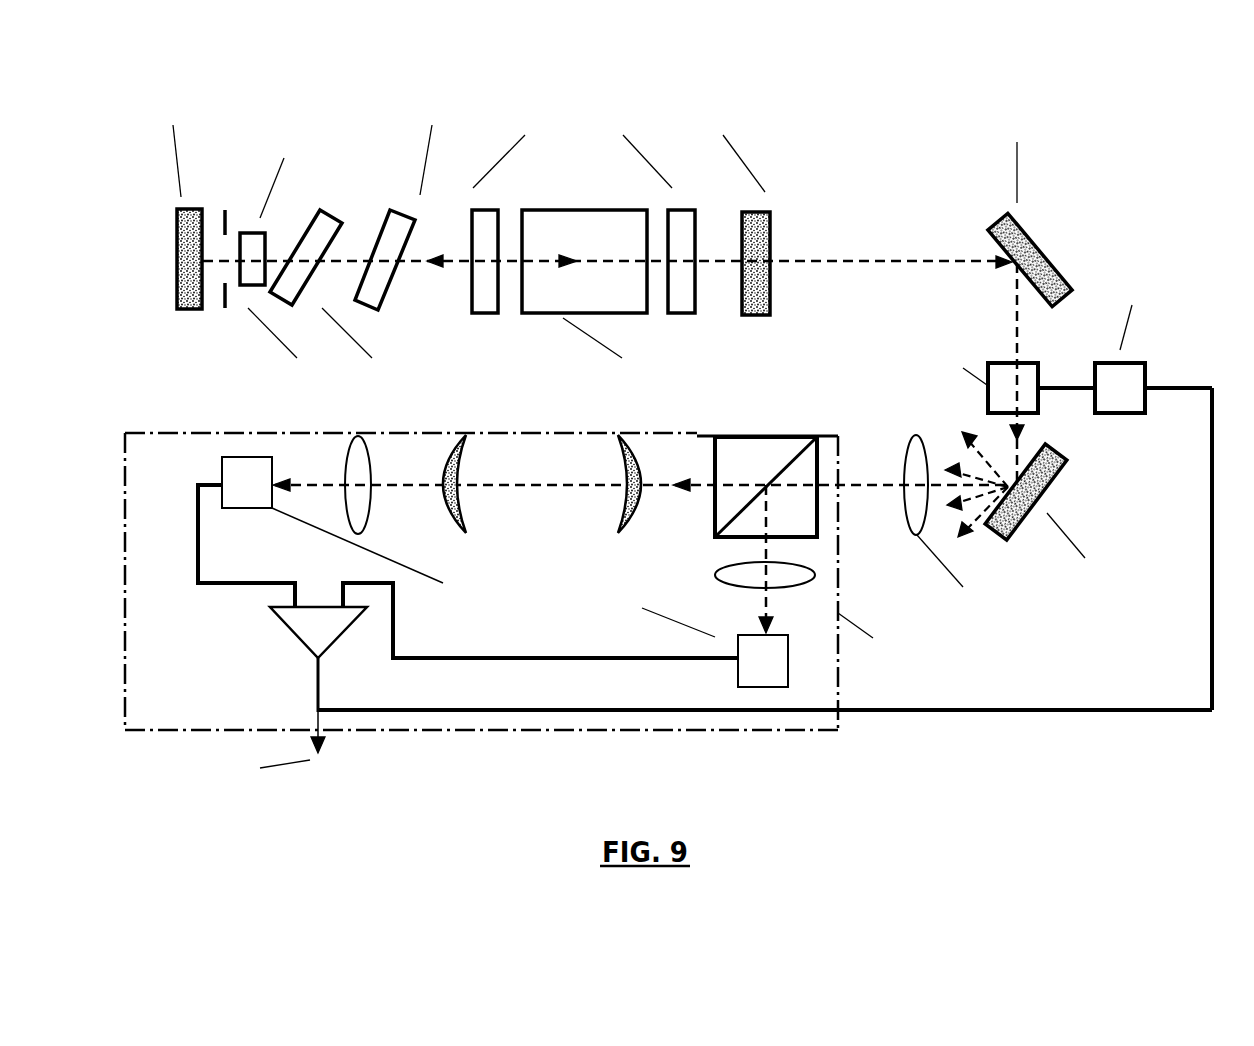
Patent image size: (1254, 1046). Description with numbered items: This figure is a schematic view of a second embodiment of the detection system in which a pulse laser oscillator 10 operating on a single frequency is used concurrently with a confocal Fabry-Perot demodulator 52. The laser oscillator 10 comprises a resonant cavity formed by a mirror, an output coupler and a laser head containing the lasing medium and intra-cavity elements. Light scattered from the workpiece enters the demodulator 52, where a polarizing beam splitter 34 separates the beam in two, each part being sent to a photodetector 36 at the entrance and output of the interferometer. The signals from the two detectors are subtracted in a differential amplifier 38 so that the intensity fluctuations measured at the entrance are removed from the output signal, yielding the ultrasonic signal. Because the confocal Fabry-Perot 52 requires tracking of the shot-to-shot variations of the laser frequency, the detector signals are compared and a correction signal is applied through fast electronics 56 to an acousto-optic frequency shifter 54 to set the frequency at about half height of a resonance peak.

The pulse laser oscillator 10 is at (838, 185).
The polarizing beam splitter 34 is at (742, 455).
The photodetector 36 is at (243, 475).
The differential amplifier 38 is at (317, 630).
The confocal Fabry-Perot demodulator 52 is at (470, 731).
The acousto-optic frequency shifter 54 is at (1005, 367).
The fast electronics 56 is at (1127, 370).